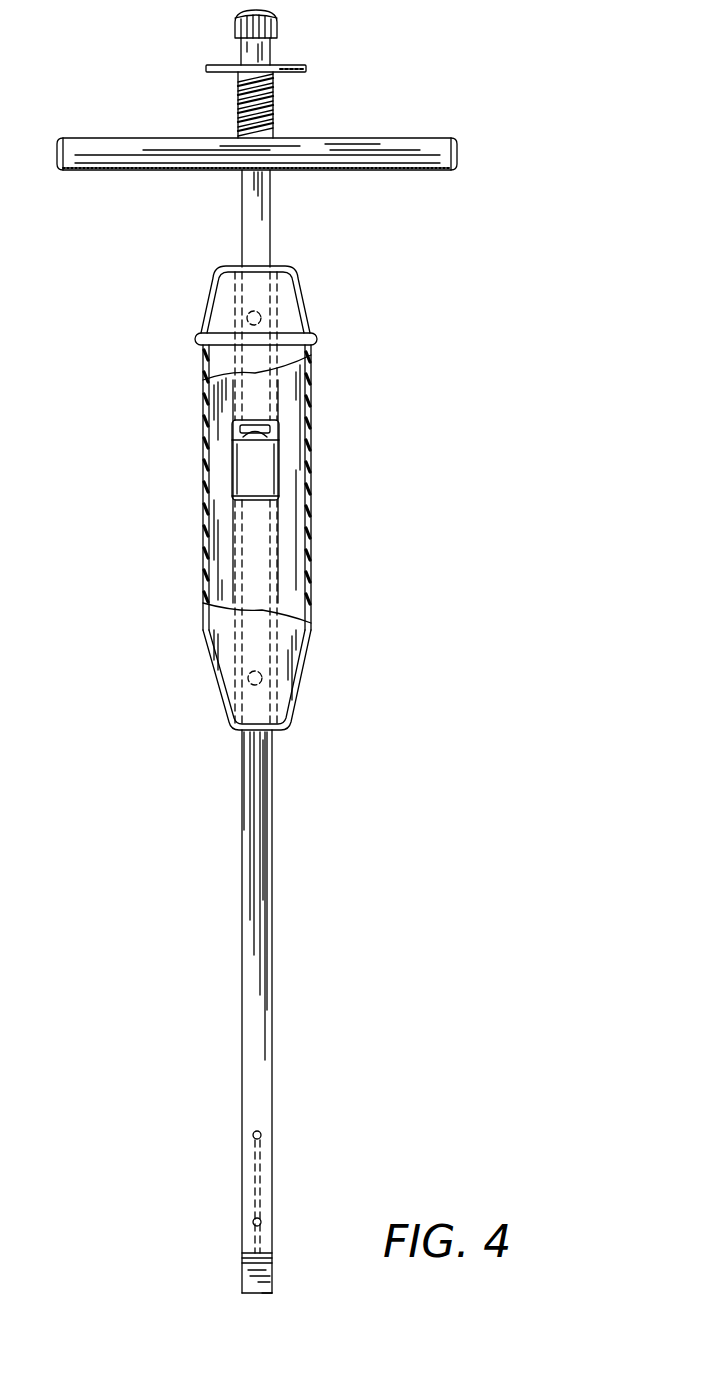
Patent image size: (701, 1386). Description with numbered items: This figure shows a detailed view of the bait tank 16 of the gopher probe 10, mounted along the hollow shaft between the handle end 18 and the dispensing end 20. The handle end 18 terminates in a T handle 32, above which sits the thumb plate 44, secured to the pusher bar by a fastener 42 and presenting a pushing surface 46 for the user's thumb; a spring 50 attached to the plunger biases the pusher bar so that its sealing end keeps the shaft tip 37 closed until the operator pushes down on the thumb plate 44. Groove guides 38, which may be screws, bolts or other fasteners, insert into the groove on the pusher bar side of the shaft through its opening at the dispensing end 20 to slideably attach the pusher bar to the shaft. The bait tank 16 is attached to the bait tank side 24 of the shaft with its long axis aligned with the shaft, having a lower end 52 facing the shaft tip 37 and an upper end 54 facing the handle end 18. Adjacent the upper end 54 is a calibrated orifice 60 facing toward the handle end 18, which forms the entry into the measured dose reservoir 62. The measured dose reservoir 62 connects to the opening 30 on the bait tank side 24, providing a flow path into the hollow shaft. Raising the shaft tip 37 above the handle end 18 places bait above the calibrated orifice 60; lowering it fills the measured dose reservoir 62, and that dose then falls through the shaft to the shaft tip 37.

The gopher probe 10 is at (483, 75).
The bait tank 16 is at (333, 542).
The handle end 18 is at (240, 190).
The dispensing end 20 is at (242, 1248).
The bait tank side 24 is at (260, 1013).
The opening 30 is at (263, 480).
The T handle 32 is at (458, 157).
The shaft tip 37 is at (270, 1296).
The groove guides 38 is at (265, 1223).
The fastener 42 is at (275, 12).
The thumb plate 44 is at (320, 64).
The pushing surface 46 is at (218, 64).
The spring 50 is at (238, 128).
The lower end 52 is at (285, 720).
The upper end 54 is at (305, 288).
The calibrated orifice 60 is at (283, 428).
The measured dose reservoir 62 is at (290, 458).